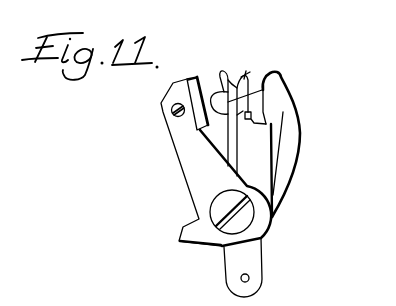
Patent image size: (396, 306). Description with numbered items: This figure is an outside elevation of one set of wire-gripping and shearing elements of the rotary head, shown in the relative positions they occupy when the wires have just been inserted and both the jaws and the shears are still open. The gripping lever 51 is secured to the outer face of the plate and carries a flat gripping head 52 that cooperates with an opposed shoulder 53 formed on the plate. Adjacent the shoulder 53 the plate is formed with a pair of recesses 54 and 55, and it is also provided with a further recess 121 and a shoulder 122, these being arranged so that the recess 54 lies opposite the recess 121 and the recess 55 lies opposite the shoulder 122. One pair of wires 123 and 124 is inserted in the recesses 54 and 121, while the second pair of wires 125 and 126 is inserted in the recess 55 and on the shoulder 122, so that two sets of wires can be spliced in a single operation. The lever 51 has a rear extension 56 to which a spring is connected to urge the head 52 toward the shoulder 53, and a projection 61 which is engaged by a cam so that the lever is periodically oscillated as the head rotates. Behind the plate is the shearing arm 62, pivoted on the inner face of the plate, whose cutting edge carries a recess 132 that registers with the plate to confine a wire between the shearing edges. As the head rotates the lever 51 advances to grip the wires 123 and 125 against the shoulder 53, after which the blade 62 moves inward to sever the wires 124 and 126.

The gripping lever 51 is at (186, 176).
The flat gripping head 52 is at (192, 77).
The shoulder 53 is at (223, 77).
The recess 54 is at (218, 80).
The recess 55 is at (204, 133).
The rear extension 56 is at (263, 277).
The projection 61 is at (189, 244).
The shearing arm 62 is at (298, 134).
The recess 121 is at (244, 70).
The shoulder 122 is at (253, 125).
The wire 123 is at (228, 102).
The wire 124 is at (240, 76).
The wire 125 is at (245, 100).
The wire 126 is at (237, 115).
The recess 132 is at (253, 119).